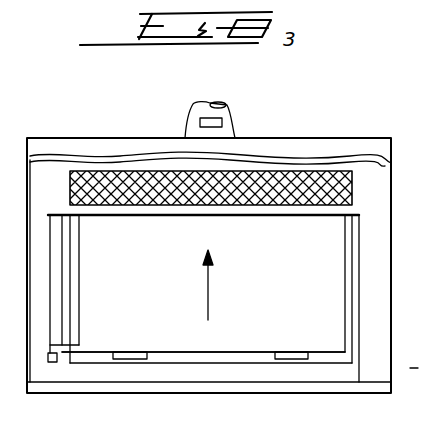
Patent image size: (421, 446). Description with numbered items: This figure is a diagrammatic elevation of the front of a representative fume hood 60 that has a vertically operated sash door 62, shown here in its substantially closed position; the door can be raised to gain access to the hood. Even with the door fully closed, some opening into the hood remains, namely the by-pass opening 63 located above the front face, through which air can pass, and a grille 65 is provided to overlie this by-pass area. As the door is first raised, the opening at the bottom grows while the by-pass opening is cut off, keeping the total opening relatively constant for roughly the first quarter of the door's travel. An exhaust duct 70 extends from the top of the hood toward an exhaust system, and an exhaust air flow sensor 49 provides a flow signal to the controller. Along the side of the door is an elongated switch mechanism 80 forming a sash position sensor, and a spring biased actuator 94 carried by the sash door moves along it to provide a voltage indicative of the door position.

The exhaust air flow sensor 49 is at (200, 119).
The fume hood 60 is at (302, 138).
The sash door 62 is at (225, 353).
The by-pass opening 63 is at (362, 160).
The grille 65 is at (148, 174).
The exhaust duct 70 is at (233, 112).
The switch mechanism 80 is at (52, 214).
The actuator 94 is at (53, 360).